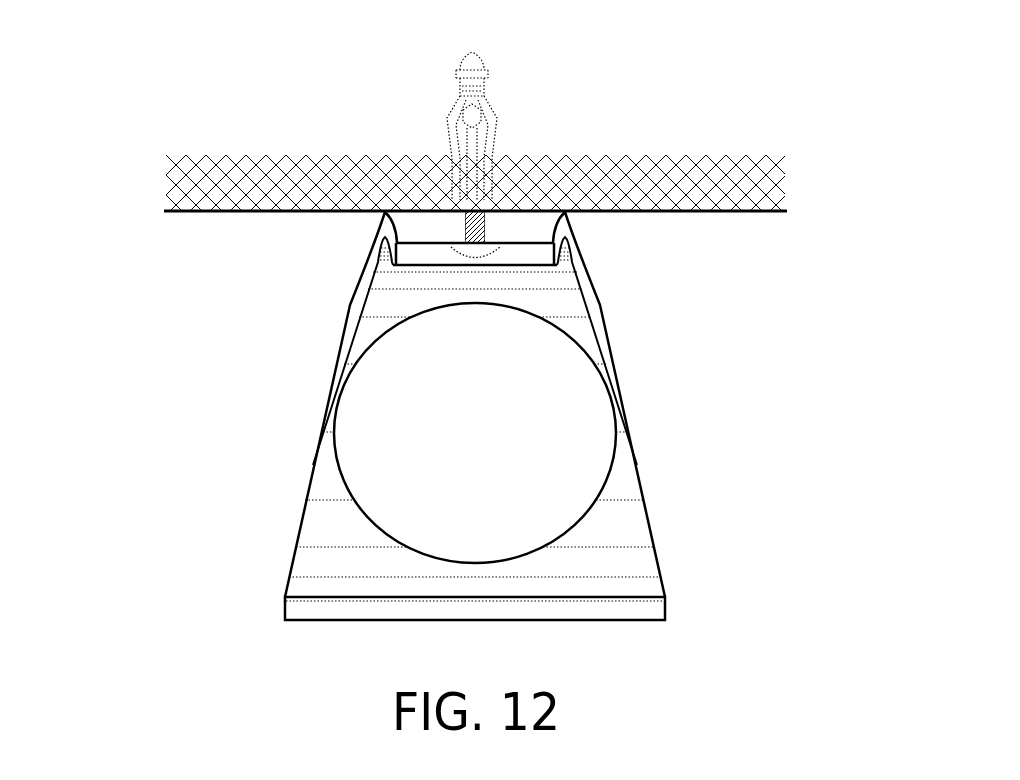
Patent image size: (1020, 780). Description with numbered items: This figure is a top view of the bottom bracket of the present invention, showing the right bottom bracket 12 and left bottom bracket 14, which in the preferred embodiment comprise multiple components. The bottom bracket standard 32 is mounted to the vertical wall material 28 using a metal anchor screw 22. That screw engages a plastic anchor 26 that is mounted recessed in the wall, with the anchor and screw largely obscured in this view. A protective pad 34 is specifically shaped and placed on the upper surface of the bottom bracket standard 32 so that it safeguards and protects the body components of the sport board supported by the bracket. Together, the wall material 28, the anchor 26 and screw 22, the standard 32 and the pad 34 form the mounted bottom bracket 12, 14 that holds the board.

The right bottom bracket 12 is at (387, 416).
The left bottom bracket 14 is at (510, 416).
The metal anchor screw 22 is at (470, 220).
The plastic anchor 26 is at (502, 115).
The vertical wall material 28 is at (653, 213).
The bottom bracket standard 32 is at (640, 463).
The protective pad 34 is at (598, 372).